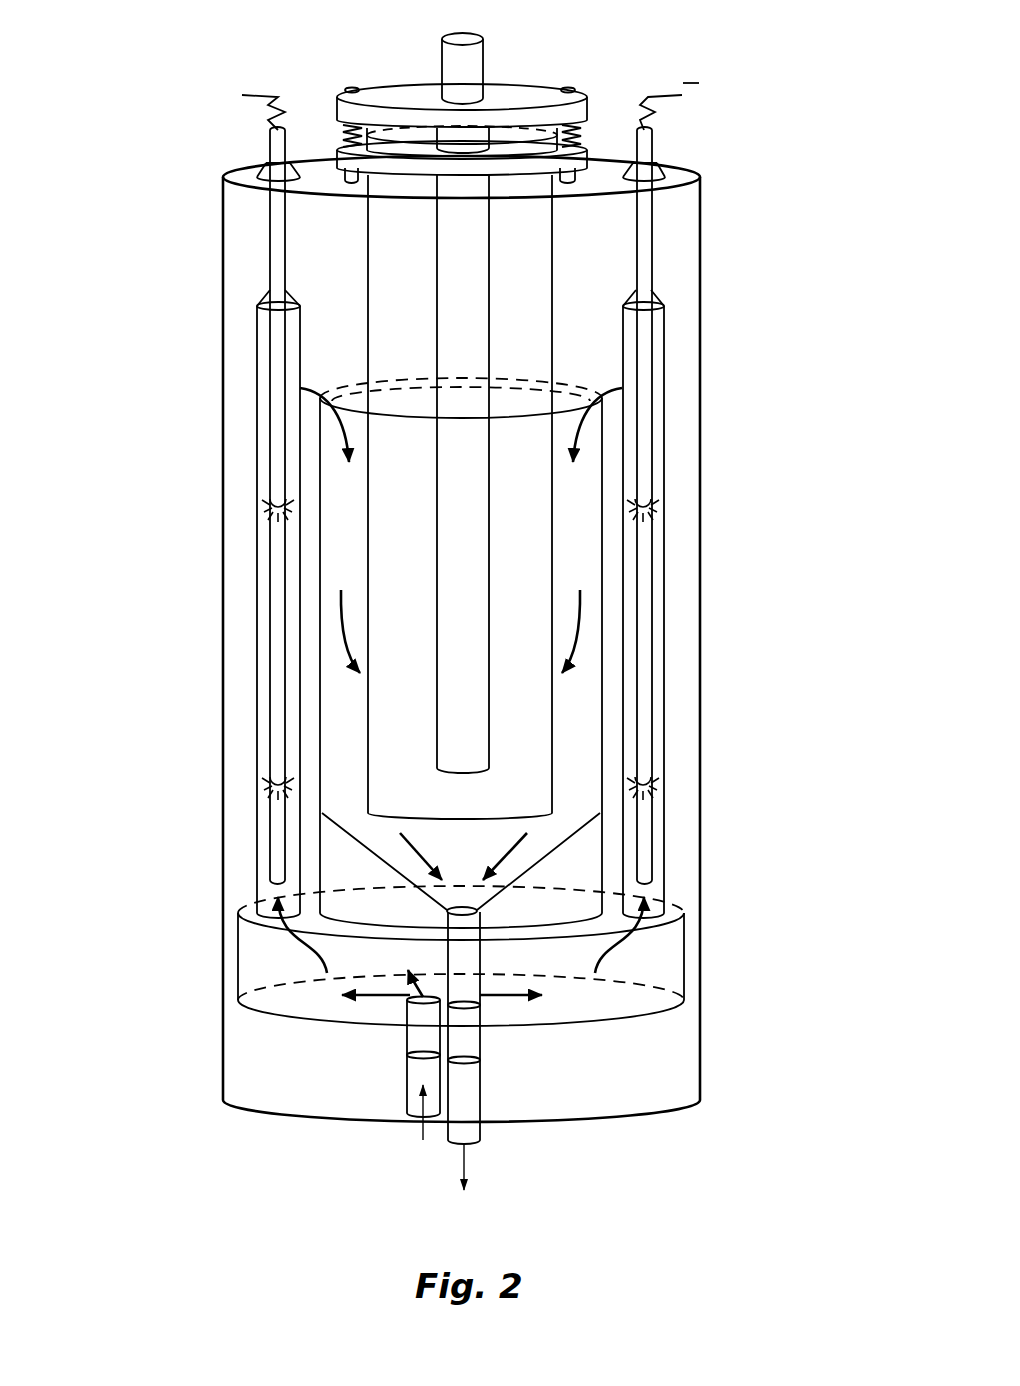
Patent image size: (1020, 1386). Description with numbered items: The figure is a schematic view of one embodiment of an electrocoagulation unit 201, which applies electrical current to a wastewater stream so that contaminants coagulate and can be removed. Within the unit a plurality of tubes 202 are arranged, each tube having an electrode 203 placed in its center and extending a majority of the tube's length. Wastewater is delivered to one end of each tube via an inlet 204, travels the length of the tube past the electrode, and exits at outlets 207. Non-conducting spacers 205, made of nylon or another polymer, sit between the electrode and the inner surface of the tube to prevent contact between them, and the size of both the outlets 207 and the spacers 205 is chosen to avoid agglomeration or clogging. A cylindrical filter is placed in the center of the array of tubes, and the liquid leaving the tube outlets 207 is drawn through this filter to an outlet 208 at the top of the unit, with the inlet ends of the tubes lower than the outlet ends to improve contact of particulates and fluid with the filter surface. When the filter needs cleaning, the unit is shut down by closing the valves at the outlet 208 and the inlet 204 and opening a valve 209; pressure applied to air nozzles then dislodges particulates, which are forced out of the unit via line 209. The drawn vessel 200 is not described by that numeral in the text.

The reaction vessel / inner cup 200 is at (356, 726).
The electrocoagulation unit 201 is at (215, 272).
The tubes 202 is at (252, 570).
The electrode 203 is at (268, 635).
The inlet 204 is at (397, 1085).
The non-conducting spacers 205 is at (258, 496).
The outlets 207 is at (296, 393).
The outlet 208 is at (492, 58).
The valve 209 is at (483, 1093).